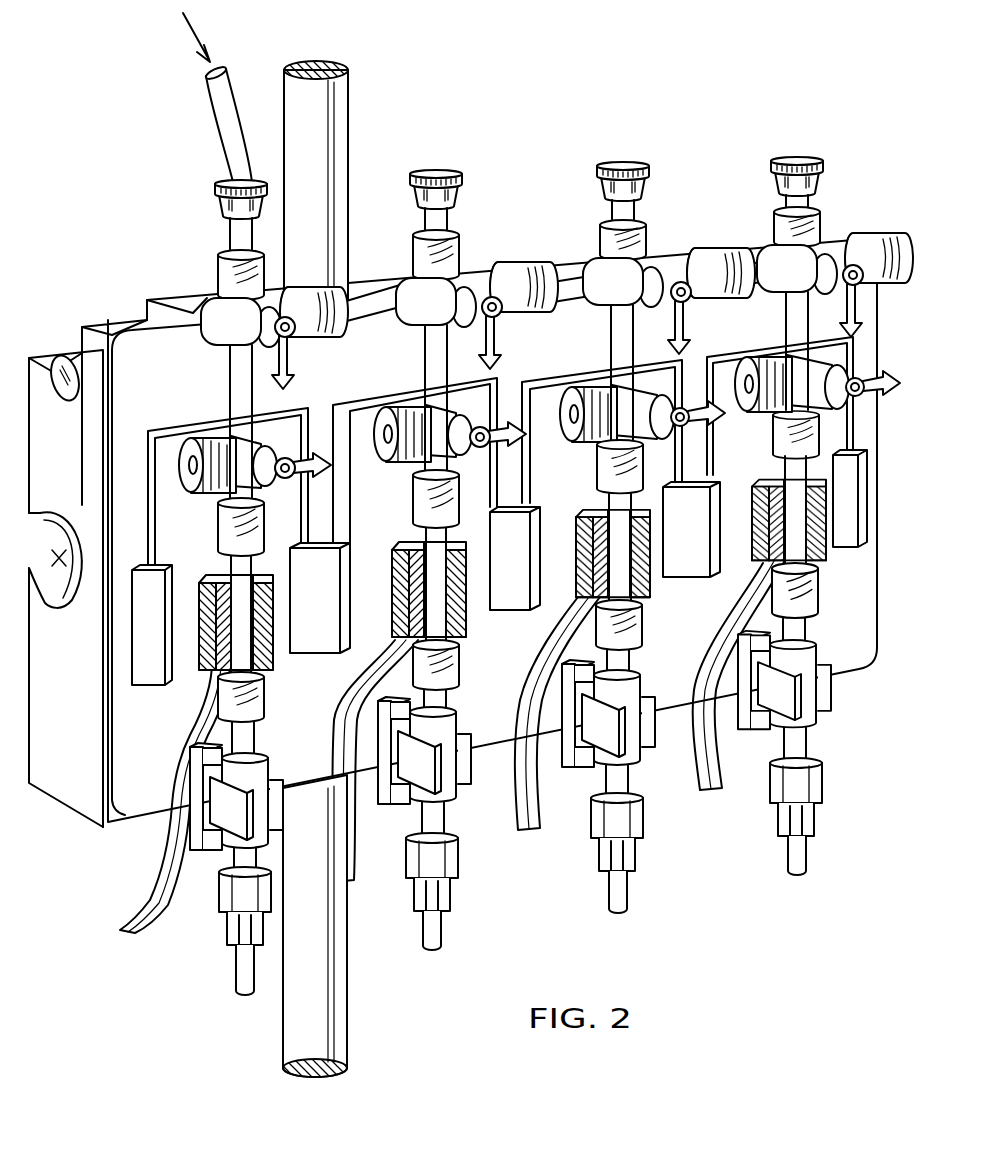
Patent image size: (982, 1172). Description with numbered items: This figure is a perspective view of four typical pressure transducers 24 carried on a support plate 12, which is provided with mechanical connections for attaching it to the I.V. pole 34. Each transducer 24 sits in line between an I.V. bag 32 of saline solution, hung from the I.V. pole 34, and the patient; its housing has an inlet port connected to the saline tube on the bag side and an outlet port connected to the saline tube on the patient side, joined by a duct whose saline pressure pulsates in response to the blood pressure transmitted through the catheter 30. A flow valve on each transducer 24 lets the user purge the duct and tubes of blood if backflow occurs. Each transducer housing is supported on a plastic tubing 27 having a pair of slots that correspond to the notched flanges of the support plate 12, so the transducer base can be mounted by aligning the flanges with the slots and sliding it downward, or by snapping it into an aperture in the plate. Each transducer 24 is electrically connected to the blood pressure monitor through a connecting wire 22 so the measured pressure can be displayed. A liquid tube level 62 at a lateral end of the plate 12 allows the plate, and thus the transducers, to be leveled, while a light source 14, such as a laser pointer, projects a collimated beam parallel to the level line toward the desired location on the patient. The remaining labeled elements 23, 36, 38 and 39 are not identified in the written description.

The support plate 12 is at (847, 643).
The light source 14 is at (52, 603).
The connecting wire 22 is at (157, 863).
The inlet tubing 23 is at (227, 139).
The transducer 24 is at (273, 664).
The plastic tubing 27 is at (413, 533).
The catheter 30 is at (220, 536).
The I.V. bag 32 is at (267, 712).
The I.V. pole 34 is at (338, 129).
The stopcock valve 36 is at (230, 436).
The recessed slot 38 is at (147, 487).
The retaining tab 39 is at (133, 643).
The liquid tube level 62 is at (62, 398).